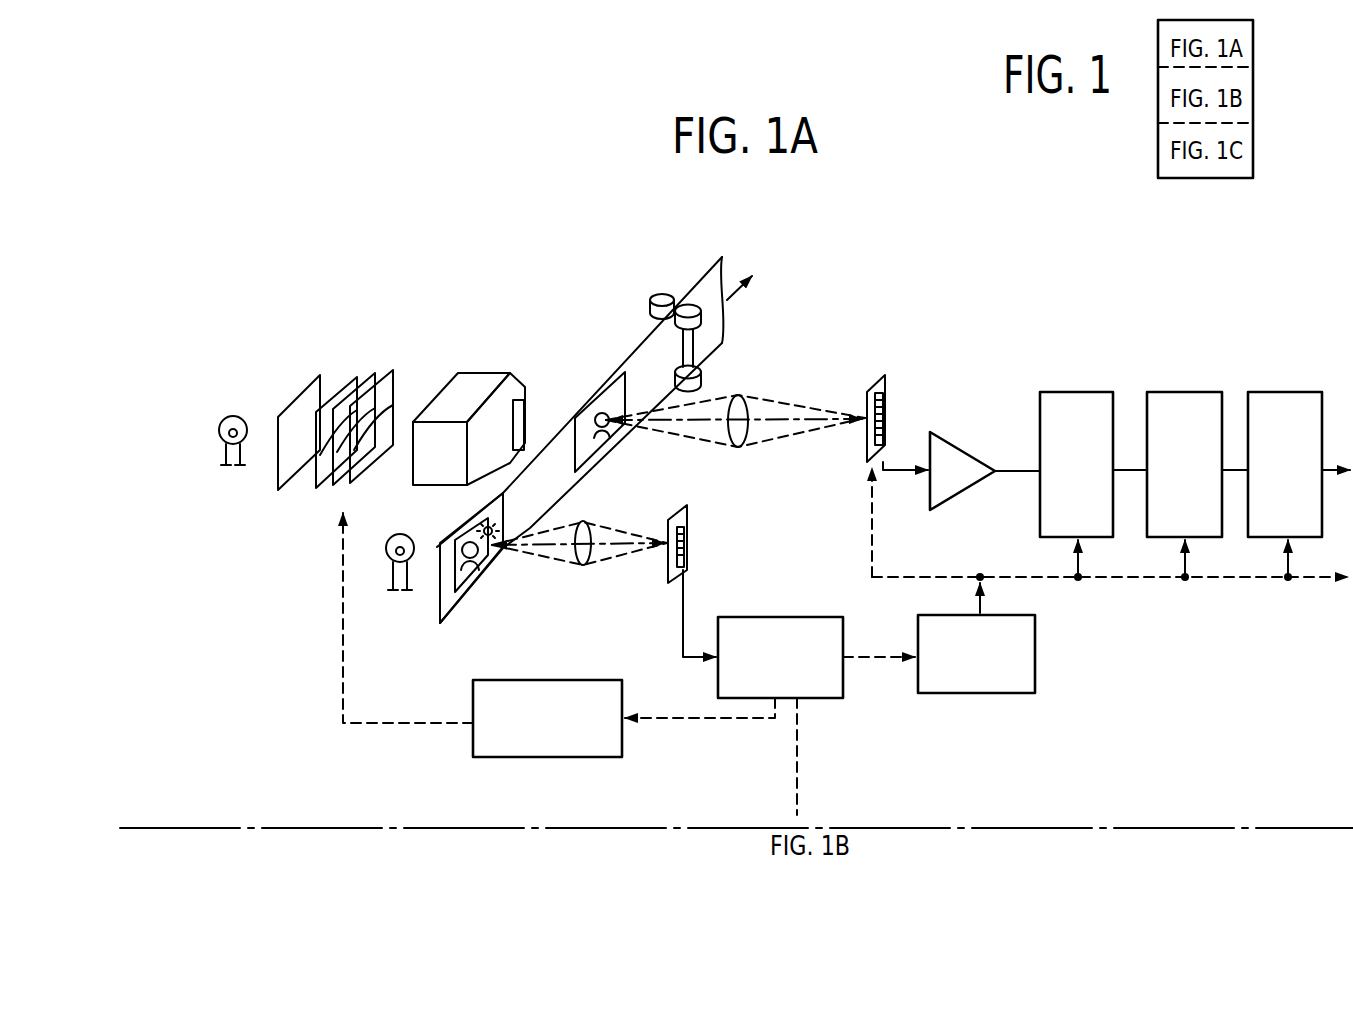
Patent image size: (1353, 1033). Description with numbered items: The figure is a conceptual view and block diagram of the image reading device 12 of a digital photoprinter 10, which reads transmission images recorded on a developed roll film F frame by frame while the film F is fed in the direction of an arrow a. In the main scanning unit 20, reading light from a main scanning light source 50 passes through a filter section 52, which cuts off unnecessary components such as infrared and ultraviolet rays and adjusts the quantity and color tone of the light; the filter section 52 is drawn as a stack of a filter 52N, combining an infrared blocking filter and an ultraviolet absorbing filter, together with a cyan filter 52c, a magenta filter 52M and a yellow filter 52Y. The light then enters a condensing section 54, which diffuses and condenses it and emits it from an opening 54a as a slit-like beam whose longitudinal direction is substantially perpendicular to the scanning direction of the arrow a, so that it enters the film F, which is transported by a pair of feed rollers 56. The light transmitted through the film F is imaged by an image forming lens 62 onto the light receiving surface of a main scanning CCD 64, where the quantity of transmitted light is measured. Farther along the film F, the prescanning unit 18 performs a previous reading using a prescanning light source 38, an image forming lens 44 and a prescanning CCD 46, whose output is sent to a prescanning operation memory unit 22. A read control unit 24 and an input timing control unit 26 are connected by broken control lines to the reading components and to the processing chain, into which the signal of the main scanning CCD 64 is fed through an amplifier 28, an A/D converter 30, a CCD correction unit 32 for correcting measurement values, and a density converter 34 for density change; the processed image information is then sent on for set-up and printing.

The digital photoprinter 10 is at (1195, 377).
The image reading device 12 is at (330, 638).
The prescanning unit 18 is at (598, 564).
The main scanning unit 20 is at (823, 305).
The prescanning operation memory unit 22 is at (843, 622).
The read control unit 24 is at (622, 690).
The input timing control unit 26 is at (1037, 636).
The amplifier 28 is at (970, 452).
The A/D converter 30 is at (1058, 392).
The CCD correction unit 32 is at (1166, 392).
The density converter 34 is at (1268, 392).
The prescanning light source 38 is at (386, 560).
The image forming lens 44 is at (568, 566).
The prescanning CCD 46 is at (688, 545).
The main scanning light source 50 is at (236, 415).
The filter section 52 is at (361, 373).
The filter 52N is at (300, 392).
The cyan filter 52c is at (352, 380).
The yellow filter 52Y is at (392, 396).
The magenta filter 52M is at (340, 497).
The condensing section 54 is at (513, 382).
The opening 54a is at (527, 416).
The feed rollers 56 is at (668, 295).
The image forming lens 62 is at (741, 397).
The main scanning CCD 64 is at (887, 388).
The film F is at (558, 484).
The arrow a is at (752, 276).